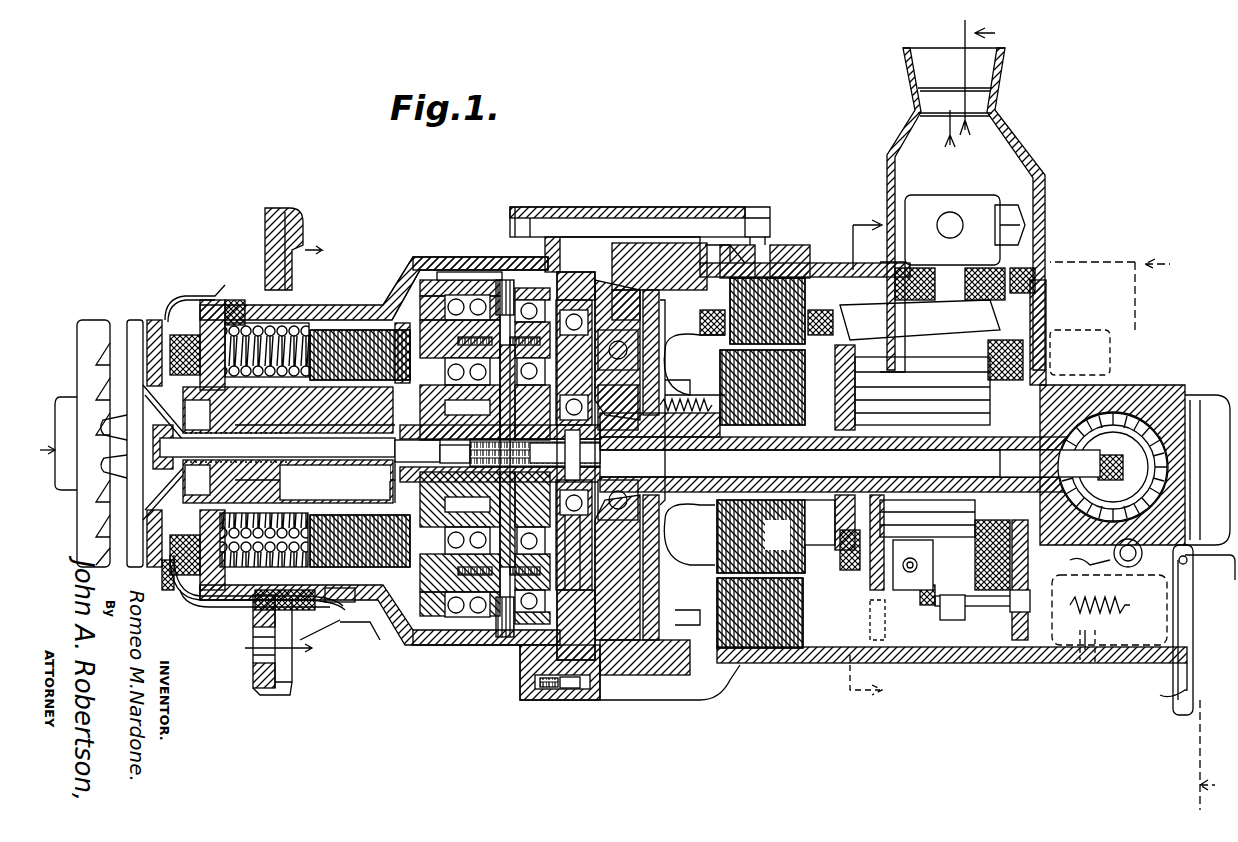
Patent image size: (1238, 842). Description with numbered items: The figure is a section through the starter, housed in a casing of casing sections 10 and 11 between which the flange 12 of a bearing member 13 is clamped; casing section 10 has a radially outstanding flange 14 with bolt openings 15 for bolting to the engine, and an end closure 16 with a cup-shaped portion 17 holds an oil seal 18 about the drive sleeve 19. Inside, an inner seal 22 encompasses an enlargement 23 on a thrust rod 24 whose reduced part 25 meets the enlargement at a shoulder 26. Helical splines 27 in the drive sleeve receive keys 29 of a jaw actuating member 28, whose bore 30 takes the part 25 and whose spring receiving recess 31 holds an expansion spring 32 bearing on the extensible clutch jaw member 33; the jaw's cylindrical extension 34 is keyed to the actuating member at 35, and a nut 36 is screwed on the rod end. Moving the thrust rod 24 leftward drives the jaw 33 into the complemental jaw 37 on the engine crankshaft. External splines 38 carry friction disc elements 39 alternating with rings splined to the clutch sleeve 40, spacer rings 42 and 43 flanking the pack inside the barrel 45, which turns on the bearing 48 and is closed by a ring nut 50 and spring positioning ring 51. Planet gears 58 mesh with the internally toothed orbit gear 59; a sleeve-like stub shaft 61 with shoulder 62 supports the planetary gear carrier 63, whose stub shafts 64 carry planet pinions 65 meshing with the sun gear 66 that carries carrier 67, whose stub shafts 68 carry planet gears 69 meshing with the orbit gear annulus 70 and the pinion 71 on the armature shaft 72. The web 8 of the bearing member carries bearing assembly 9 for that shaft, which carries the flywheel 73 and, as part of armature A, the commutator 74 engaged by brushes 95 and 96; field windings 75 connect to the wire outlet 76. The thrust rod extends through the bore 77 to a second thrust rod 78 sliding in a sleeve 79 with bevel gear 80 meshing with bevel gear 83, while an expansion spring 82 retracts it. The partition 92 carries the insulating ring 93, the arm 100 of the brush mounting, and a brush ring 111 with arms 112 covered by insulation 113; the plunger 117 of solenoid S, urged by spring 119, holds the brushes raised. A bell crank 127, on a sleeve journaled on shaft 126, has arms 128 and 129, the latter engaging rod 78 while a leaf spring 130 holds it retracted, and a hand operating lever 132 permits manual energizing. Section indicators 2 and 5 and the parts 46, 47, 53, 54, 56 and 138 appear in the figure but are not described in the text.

The section line 2- 2 is at (852, 457).
The section line 5- 5 is at (1095, 417).
The web 8 is at (617, 460).
The bearing assembly 9 is at (576, 466).
The casing section 10 is at (440, 648).
The casing section 11 is at (760, 663).
The flange 12 is at (565, 690).
The bearing member 13 is at (540, 682).
The radially outstanding flange 14 is at (275, 695).
The bolt openings 15 is at (270, 235).
The end closure 16 is at (205, 607).
The cup-shaped portion 17 is at (172, 570).
The oil seal 18 is at (185, 296).
The drive sleeve 19 is at (140, 395).
The inner seal 22 is at (315, 440).
The enlargement 23 is at (453, 458).
The thrust rod 24 is at (378, 481).
The forwardly extending part 25 is at (277, 447).
The shoulder 26 is at (417, 449).
The helical splines 27 is at (315, 474).
The jaw actuating member 28 is at (360, 448).
The keys 29 is at (335, 482).
The bore 30 is at (303, 445).
The spring receiving recess 31 is at (288, 445).
The expansion spring 32 is at (197, 415).
The extensible clutch jaw member 33 is at (155, 320).
The cylindrical extension 34 is at (165, 490).
The key 35 is at (197, 480).
The nut 36 is at (153, 440).
The complemental jaw 37 is at (95, 330).
The splines 38 is at (368, 472).
The friction disc elements 39 is at (384, 371).
The clutch sleeve 40 is at (400, 290).
The spacer ring 42 is at (345, 305).
The spacer ring 43 is at (395, 605).
The barrel 45 is at (300, 305).
The bracket 46 is at (375, 632).
The bracket arm 47 is at (330, 625).
The bearing 48 is at (440, 262).
The ring nut 50 is at (190, 335).
The spring positioning ring 51 is at (215, 310).
The packing 53 is at (170, 590).
The packing 54 is at (280, 590).
The plate 56 is at (335, 600).
The planet gear 58 is at (445, 280).
The internally toothed orbit gear 59 is at (478, 272).
The sleeve-like stub shaft 61 is at (485, 456).
The shoulder 62 is at (500, 453).
The planetary gear carrier 63 is at (505, 280).
The stub shafts 64 is at (640, 226).
The planet pinion 65 is at (560, 290).
The sun gear 66 is at (547, 535).
The planet gear carrier 67 is at (550, 434).
The stub shafts 68 is at (598, 340).
The planet gear 69 is at (660, 300).
The internally toothed orbit gear annulus 70 is at (525, 655).
The pinion 71 is at (570, 510).
The armature shaft 72 is at (734, 379).
The flywheel 73 is at (680, 295).
The commutator 74 is at (915, 395).
The field windings 75 is at (766, 294).
The wire outlet 76 is at (1040, 140).
The bore 77 is at (880, 464).
The thrust rod 78 is at (785, 462).
The sleeve 79 is at (1050, 463).
The bevel gear 80 is at (1112, 465).
The expansion spring 82 is at (625, 431).
The bevel gear 83 is at (1120, 450).
The partition member 92 is at (1040, 345).
The ring of insulating material 93 is at (990, 335).
The brush 95 is at (890, 570).
The brush 96 is at (935, 560).
The arm 100 is at (880, 600).
The brush ring 111 is at (913, 586).
The arm 112 is at (950, 620).
The insulation 113 is at (925, 610).
The plunger 117 is at (1010, 605).
The expansion spring 119 is at (1088, 660).
The shaft 126 is at (1174, 555).
The bell crank 127 is at (1109, 607).
The arm 128 is at (1090, 563).
The arm 129 is at (1113, 467).
The leaf spring 130 is at (1173, 660).
The hand operating lever 132 is at (1178, 670).
The hub 138 is at (1084, 467).
The armature A is at (734, 574).
The solenoid S is at (1098, 655).